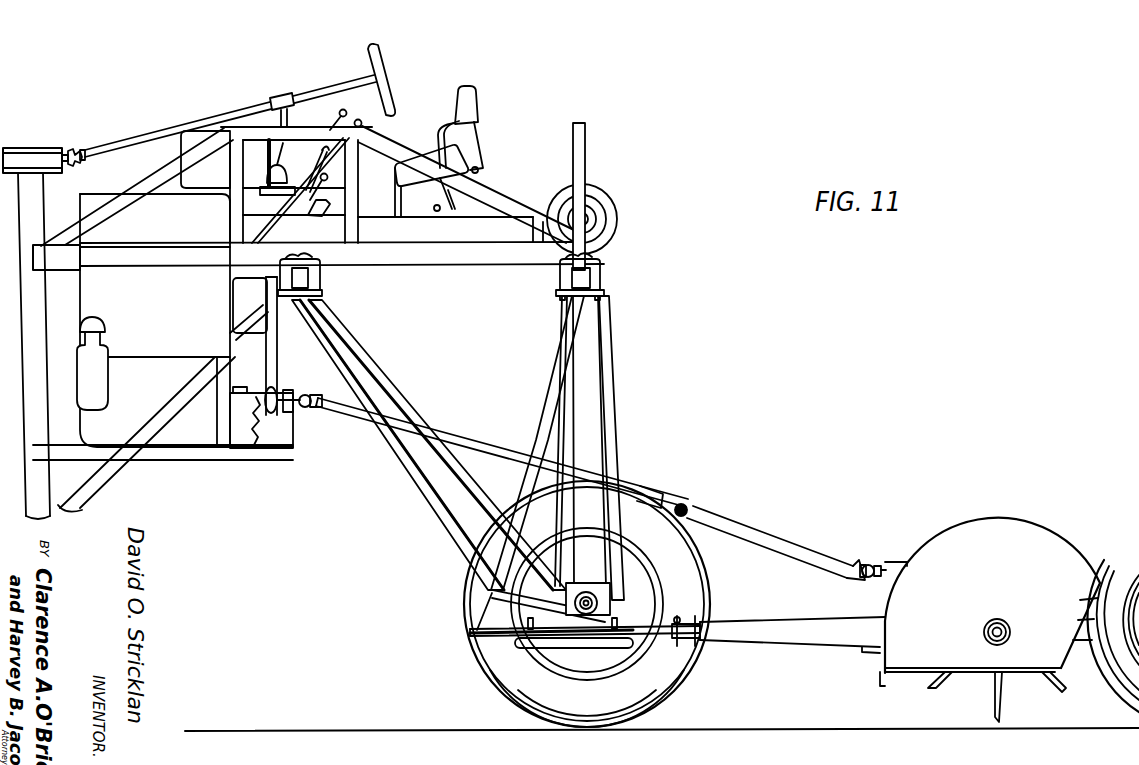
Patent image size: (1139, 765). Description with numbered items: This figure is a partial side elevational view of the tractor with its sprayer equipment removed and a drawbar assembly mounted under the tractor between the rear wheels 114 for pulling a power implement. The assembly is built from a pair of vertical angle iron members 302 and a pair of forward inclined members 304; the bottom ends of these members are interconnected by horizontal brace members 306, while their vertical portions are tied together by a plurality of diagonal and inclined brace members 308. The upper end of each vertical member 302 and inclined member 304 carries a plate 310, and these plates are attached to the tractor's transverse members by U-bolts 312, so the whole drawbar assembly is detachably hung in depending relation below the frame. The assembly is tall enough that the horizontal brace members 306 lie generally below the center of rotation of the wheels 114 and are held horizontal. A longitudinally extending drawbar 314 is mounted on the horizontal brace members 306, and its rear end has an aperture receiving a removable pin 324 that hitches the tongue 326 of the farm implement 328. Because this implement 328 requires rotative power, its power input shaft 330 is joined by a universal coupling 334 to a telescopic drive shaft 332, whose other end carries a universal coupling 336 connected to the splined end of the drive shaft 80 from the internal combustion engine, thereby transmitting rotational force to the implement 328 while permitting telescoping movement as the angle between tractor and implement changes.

The drive shaft 80 is at (290, 394).
The wheels 114 is at (683, 684).
The vertical angle iron members 302 is at (612, 440).
The forward inclined members 304 is at (409, 468).
The horizontal brace members 306 is at (555, 648).
The diagonal and inclined brace members 308 is at (556, 392).
The plate 310 is at (607, 292).
The U-bolts 312 is at (601, 274).
The drawbar 314 is at (472, 637).
The removable pin 324 is at (678, 622).
The tongue 326 is at (832, 640).
The farm implement 328 is at (1023, 533).
The power input shaft 330 is at (882, 563).
The telescopic drive shaft 332 is at (753, 531).
The universal coupling 334 is at (862, 560).
The universal coupling 336 is at (315, 408).